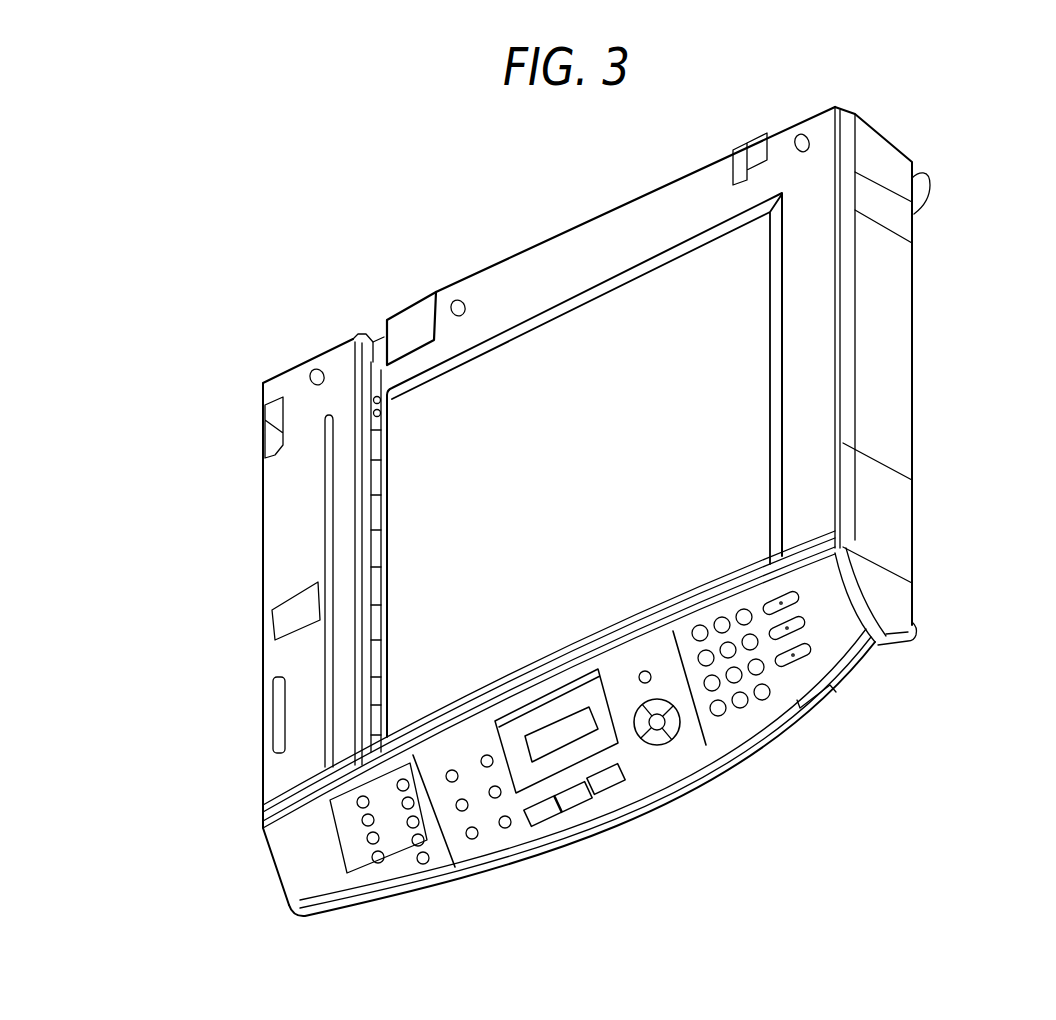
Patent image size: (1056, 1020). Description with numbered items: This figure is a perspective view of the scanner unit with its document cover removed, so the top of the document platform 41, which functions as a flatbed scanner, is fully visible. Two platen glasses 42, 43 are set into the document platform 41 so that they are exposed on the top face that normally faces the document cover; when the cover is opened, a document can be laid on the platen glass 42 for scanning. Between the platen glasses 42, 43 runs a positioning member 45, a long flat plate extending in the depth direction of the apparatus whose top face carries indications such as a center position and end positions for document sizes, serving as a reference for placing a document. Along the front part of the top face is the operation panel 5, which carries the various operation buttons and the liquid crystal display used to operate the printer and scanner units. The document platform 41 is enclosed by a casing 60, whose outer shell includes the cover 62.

The operation panel 5 is at (690, 745).
The document platform 41 is at (923, 659).
The platen glass 42 is at (498, 383).
The platen glass 43 is at (337, 418).
The positioning member 45 is at (365, 392).
The casing 60 is at (949, 540).
The cover 62 is at (290, 535).